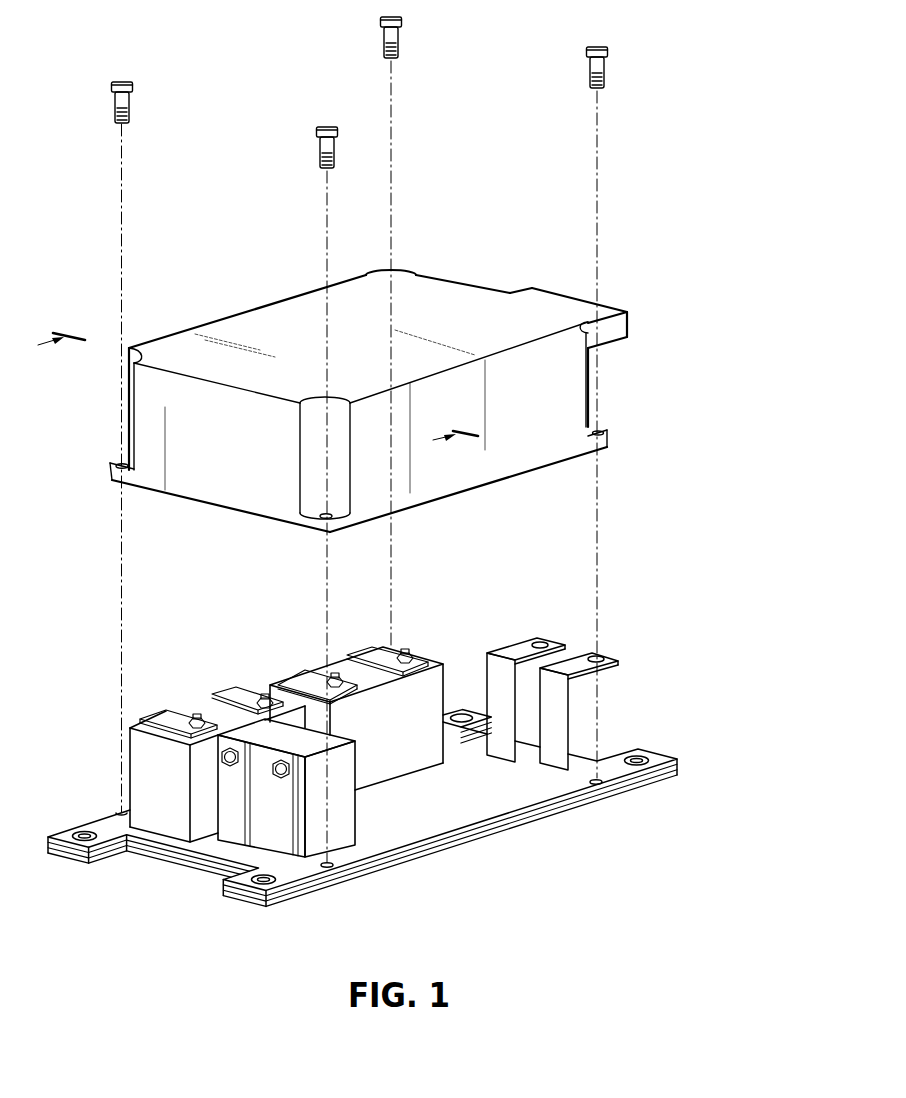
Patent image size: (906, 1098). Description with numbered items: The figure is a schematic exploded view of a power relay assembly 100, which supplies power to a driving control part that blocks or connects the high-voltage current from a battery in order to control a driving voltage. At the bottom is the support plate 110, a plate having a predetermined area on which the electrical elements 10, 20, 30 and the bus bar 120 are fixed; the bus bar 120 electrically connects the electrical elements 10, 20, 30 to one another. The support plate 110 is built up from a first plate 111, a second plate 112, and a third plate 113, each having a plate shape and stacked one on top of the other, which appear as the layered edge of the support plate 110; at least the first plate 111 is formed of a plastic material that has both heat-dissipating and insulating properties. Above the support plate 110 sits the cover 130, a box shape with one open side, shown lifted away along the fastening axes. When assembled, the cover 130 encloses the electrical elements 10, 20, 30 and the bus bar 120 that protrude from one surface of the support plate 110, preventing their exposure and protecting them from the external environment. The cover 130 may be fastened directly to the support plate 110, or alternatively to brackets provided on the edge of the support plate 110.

The power relay assembly 100 is at (290, 203).
The cover 130 is at (595, 380).
The support plate 110 is at (422, 780).
The first plate 111 is at (677, 782).
The second plate 112 is at (677, 768).
The third plate 113 is at (662, 760).
The bus bar 120 is at (615, 650).
The electrical element 10 is at (343, 838).
The electrical element 20 is at (205, 710).
The electrical element 30 is at (347, 667).